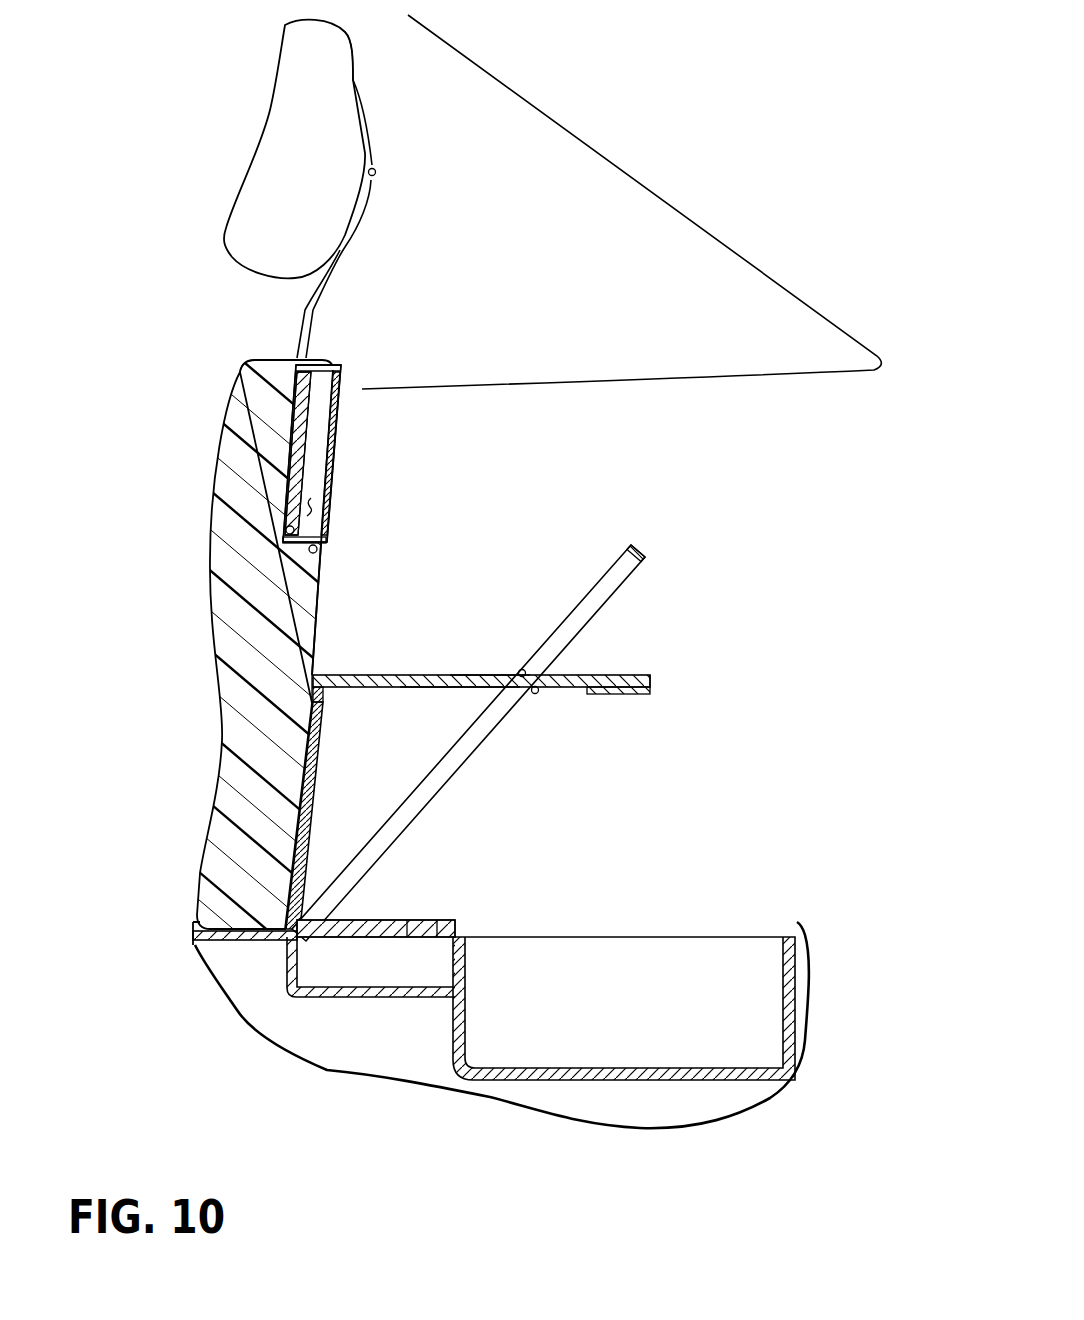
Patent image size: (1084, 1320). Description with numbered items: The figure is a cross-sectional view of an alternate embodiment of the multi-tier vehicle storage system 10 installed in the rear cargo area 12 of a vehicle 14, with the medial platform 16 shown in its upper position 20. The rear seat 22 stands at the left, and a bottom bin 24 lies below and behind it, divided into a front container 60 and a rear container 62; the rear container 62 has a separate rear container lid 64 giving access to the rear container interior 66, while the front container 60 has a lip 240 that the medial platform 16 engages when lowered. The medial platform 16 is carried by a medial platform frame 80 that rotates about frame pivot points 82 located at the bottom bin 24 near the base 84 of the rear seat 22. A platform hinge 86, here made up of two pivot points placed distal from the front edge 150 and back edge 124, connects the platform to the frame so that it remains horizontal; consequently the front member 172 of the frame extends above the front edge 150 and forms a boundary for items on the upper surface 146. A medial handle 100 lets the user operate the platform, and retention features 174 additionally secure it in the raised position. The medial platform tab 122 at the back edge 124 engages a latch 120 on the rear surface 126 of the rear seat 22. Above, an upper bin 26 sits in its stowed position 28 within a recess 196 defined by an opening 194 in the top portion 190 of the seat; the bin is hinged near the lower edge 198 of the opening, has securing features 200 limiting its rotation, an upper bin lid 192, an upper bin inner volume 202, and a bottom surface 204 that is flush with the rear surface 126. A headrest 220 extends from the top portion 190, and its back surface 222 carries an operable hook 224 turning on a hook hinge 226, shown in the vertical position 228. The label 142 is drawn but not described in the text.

The multi-tier vehicle storage system 10 is at (749, 175).
The rear cargo area 12 is at (876, 662).
The vehicle 14 is at (536, 105).
The medial platform 16 is at (443, 675).
The upper position 20 is at (447, 693).
The rear seat 22 is at (210, 683).
The bottom bin 24 is at (807, 1043).
The upper bin 26 is at (350, 472).
The stowed position 28 is at (353, 375).
The front container 60 is at (795, 993).
The rear container 62 is at (333, 997).
The rear container lid 64 is at (385, 918).
The rear container interior 66 is at (366, 978).
The medial platform frame 80 is at (450, 768).
The frame pivot points 82 is at (270, 941).
The base 84 is at (245, 944).
The platform hinge 86 is at (522, 672).
The medial handle 100 is at (613, 690).
The latch 120 is at (327, 692).
The medial platform tab 122 is at (315, 695).
The back edge 124 is at (318, 672).
The rear surface 126 is at (320, 628).
The space 142 is at (706, 458).
The upper surface 146 is at (468, 675).
The front edge 150 is at (650, 677).
The front member 172 is at (648, 550).
The retention features 174 is at (535, 691).
The top portion 190 is at (277, 357).
The upper bin lid 192 is at (297, 428).
The opening 194 is at (335, 367).
The recess 196 is at (290, 467).
The lower edge 198 is at (323, 552).
The securing features 200 is at (327, 541).
The upper bin inner volume 202 is at (312, 512).
The bottom surface 204 is at (337, 428).
The headrest 220 is at (245, 125).
The back surface 222 is at (357, 65).
The operable hook 224 is at (368, 123).
The hook hinge 226 is at (377, 174).
The vertical position 228 is at (372, 236).
The lip 240 is at (803, 935).